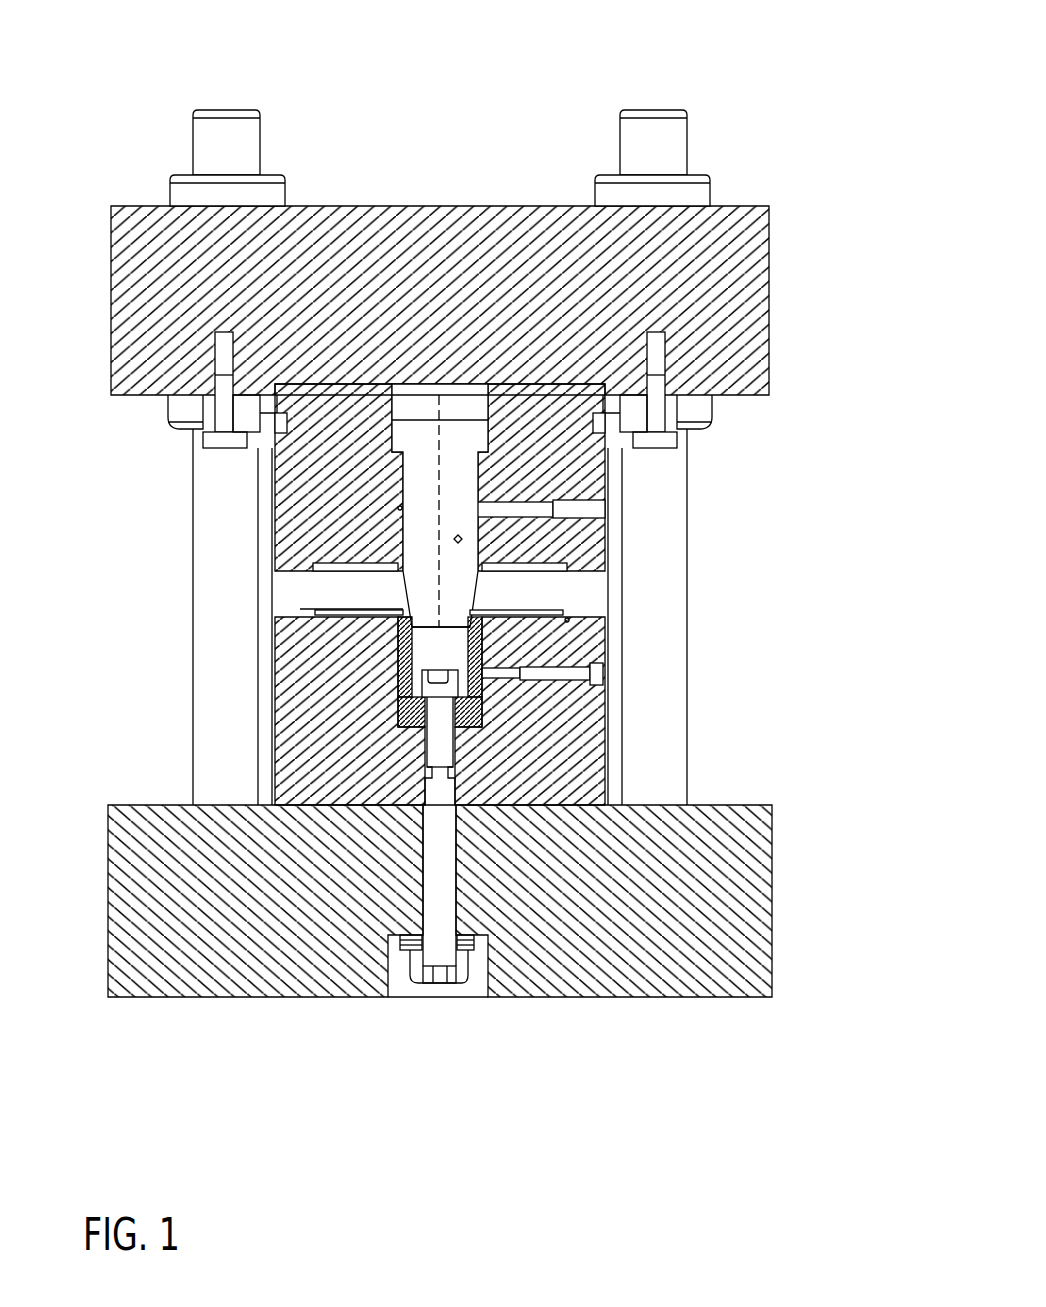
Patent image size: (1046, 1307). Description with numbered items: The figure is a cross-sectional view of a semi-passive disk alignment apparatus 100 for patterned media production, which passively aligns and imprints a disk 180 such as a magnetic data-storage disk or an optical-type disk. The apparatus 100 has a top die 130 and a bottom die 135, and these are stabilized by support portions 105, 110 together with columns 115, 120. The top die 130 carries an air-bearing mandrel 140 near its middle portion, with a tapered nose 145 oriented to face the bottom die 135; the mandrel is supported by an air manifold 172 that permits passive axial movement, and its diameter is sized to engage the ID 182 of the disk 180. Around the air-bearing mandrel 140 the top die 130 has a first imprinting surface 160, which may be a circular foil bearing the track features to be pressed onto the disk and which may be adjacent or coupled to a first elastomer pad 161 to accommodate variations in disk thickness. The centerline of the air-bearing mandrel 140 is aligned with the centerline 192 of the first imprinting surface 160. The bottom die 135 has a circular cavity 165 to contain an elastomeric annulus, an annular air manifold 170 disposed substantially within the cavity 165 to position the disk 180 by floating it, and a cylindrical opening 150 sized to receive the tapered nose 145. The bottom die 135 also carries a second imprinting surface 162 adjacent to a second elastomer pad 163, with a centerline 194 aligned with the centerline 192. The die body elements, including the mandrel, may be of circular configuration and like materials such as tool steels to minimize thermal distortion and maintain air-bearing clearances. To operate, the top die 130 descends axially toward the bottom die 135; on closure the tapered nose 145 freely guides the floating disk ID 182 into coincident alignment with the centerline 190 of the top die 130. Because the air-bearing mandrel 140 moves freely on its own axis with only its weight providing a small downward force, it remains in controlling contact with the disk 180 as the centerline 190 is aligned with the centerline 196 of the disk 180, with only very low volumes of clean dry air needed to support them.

The disk alignment apparatus 100 is at (760, 63).
The support portion 105 is at (749, 286).
The support portion 110 is at (748, 902).
The column 115 is at (207, 487).
The column 120 is at (668, 783).
The top die 130 is at (592, 472).
The bottom die 135 is at (587, 737).
The air-bearing mandrel 140 is at (610, 534).
The tapered nose 145 is at (473, 597).
The cylindrical opening 150 is at (398, 660).
The first imprinting surface 160 is at (545, 573).
The first elastomer pad 161 is at (462, 539).
The second imprinting surface 162 is at (563, 611).
The second elastomer pad 163 is at (567, 620).
The circular cavity 165 is at (405, 623).
The annular air manifold 170 is at (422, 647).
The air manifold 172 is at (400, 508).
The disk 180 is at (330, 609).
The ID 182 is at (400, 610).
The centerline 190 is at (421, 360).
The centerline 192 is at (421, 360).
The centerline 194 is at (421, 360).
The centerline 196 is at (435, 408).